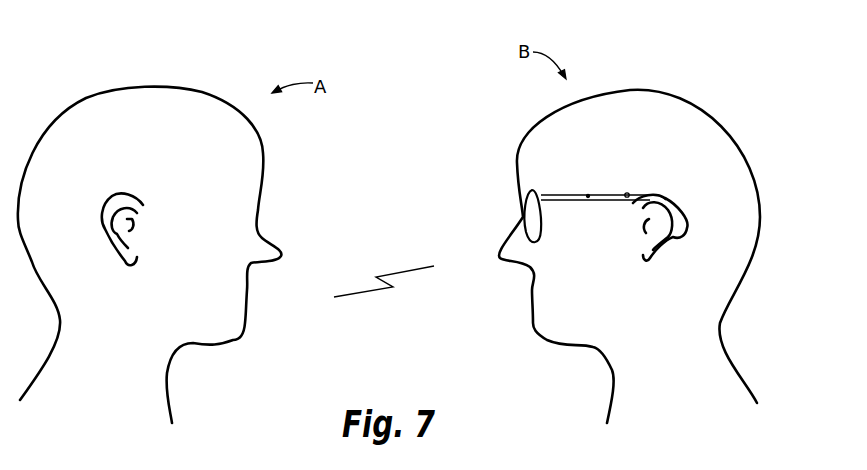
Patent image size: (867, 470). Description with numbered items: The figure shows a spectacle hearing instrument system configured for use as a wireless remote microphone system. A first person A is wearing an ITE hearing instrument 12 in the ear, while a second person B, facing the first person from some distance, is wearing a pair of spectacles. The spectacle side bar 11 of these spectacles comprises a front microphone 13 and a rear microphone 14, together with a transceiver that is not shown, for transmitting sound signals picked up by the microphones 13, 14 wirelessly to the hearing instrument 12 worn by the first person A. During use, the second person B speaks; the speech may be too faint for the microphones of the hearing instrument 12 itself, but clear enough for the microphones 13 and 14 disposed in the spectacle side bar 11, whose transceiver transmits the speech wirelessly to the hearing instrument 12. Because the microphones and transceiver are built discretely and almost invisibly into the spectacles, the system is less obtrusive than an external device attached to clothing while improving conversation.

The spectacle side bar 11 is at (557, 193).
The ITE hearing instrument 12 is at (130, 227).
The front microphone 13 is at (588, 195).
The rear microphone 14 is at (628, 193).